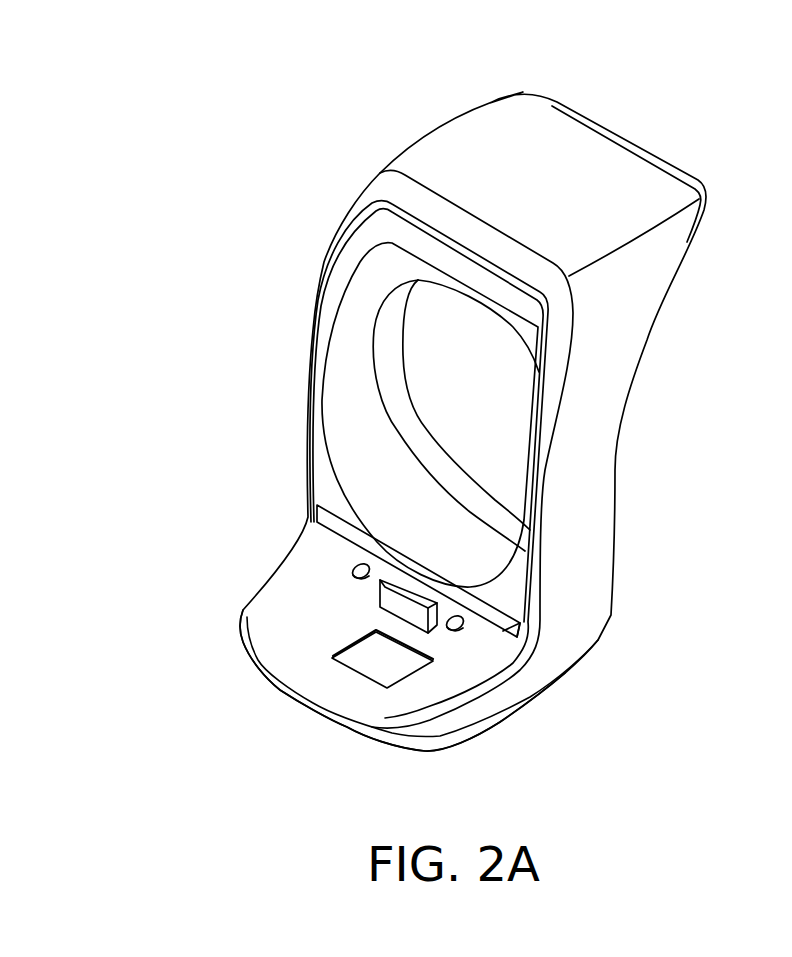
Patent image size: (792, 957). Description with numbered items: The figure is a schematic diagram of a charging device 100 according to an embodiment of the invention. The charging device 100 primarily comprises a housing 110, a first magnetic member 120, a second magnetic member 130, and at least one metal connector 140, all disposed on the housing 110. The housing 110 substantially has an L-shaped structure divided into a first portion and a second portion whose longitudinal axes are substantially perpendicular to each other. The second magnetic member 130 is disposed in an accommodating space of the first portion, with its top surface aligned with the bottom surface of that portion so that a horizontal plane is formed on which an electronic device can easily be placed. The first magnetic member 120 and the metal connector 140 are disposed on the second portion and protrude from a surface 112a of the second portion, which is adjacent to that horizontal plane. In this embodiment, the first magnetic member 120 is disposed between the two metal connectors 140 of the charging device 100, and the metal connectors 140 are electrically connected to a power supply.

The charging device 100 is at (143, 73).
The housing 110 is at (610, 378).
The surface of the second portion 112a is at (463, 653).
The first magnetic member 120 is at (393, 603).
The second magnetic member 130 is at (385, 663).
The metal connector 140 is at (352, 572).